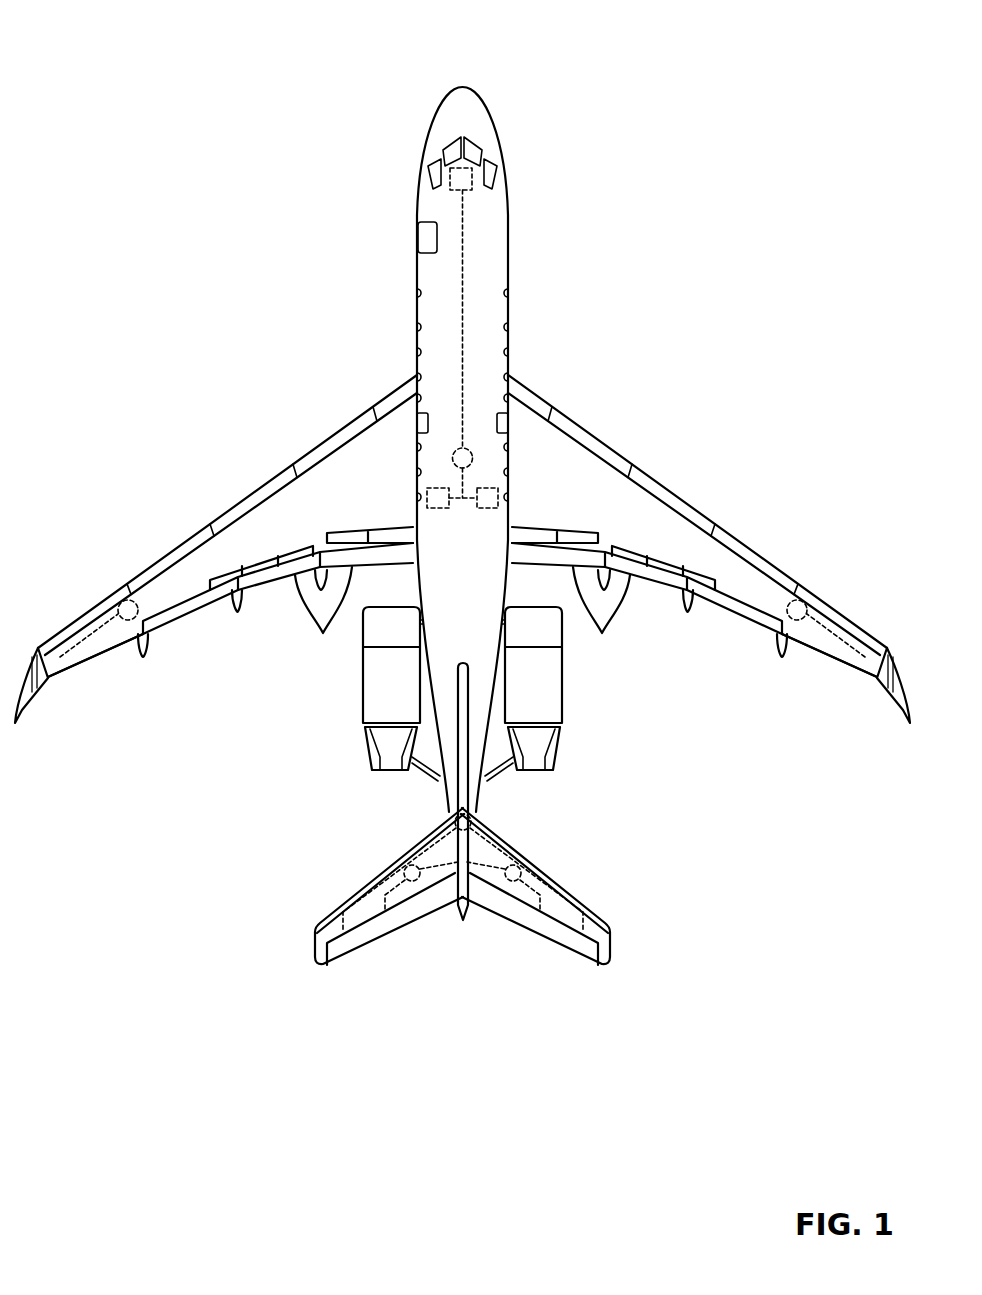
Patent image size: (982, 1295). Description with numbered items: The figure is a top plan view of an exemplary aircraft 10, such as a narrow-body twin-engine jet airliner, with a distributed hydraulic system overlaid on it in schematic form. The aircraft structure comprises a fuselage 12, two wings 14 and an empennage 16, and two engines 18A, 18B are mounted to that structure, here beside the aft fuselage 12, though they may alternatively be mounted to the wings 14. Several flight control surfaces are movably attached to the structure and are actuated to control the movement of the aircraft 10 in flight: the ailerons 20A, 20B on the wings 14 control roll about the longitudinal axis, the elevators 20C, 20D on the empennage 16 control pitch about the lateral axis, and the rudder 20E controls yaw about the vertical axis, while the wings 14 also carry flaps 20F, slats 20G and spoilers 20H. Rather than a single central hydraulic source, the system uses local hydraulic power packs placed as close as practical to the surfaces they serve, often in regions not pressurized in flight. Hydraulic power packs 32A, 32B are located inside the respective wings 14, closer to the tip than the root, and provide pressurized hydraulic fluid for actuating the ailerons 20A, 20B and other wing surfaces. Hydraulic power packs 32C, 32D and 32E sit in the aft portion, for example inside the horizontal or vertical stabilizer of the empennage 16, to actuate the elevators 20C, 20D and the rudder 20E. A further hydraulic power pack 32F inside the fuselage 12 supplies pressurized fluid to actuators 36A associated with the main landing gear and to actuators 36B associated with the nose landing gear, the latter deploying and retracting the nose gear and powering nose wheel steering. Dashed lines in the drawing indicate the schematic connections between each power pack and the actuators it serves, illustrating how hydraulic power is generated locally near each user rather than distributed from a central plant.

The aircraft 10 is at (143, 60).
The fuselage 12 is at (501, 269).
The wings 14 is at (141, 446).
The empennage 16 is at (273, 969).
The engine 18A is at (363, 706).
The engine 18B is at (562, 706).
The aileron 20A is at (97, 656).
The aileron 20B is at (828, 656).
The elevator 20C is at (370, 940).
The elevator 20D is at (552, 933).
The rudder 20E is at (463, 951).
The flap 20F is at (462, 623).
The slat 20G is at (253, 483).
The spoiler 20H is at (289, 553).
The local hydraulic power pack 32A is at (128, 600).
The local hydraulic power pack 32B is at (797, 600).
The local hydraulic power pack 32C is at (405, 866).
The local hydraulic power pack 32D is at (452, 818).
The local hydraulic power pack 32E is at (520, 866).
The local hydraulic power pack 32F is at (460, 447).
The main landing gear actuator 36A is at (478, 492).
The nose landing gear actuator 36B is at (476, 186).